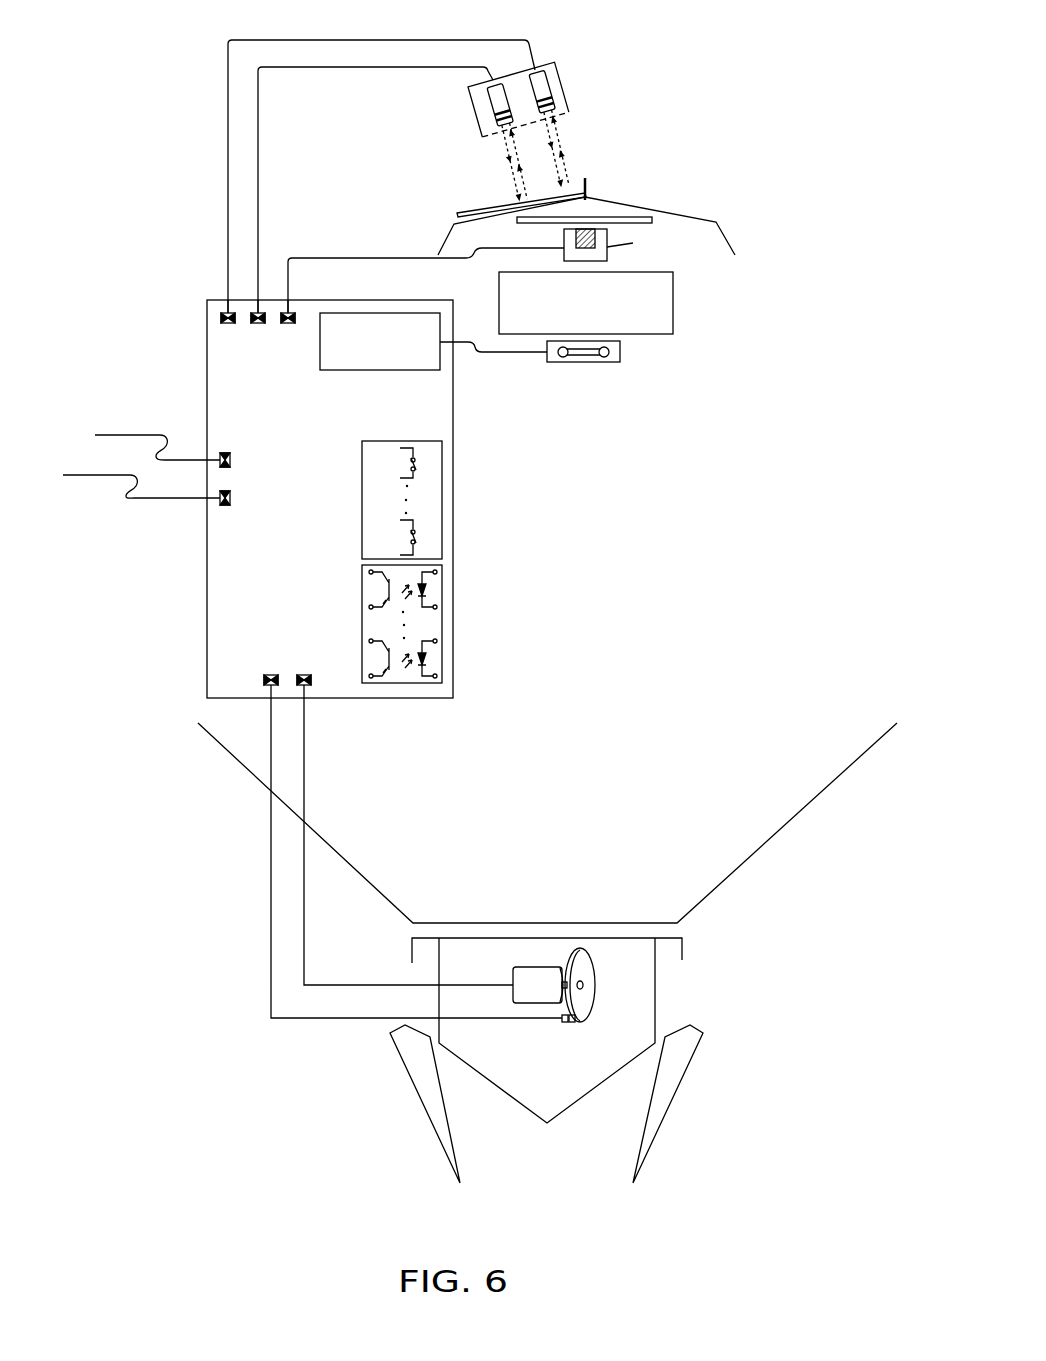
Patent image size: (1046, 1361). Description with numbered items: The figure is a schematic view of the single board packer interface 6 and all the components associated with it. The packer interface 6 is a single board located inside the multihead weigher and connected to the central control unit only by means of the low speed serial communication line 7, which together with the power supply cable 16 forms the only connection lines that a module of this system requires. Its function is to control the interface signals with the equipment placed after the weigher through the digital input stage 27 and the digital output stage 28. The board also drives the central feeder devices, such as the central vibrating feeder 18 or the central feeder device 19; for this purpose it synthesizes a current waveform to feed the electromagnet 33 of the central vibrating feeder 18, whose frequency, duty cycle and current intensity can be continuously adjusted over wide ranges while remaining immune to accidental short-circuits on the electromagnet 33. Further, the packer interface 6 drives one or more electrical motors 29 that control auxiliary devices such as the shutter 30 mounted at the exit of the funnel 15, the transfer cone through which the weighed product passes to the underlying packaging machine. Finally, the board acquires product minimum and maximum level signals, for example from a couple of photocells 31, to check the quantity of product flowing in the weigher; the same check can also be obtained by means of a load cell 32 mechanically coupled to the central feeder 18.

The packer interface 6 is at (207, 382).
The low speed serial communication line 7 is at (137, 435).
The funnel 15 is at (787, 823).
The power supply cable 16 is at (185, 500).
The central vibrating feeder 18 is at (683, 217).
The central feeder device 19 is at (462, 207).
The digital input stage 27 is at (442, 624).
The digital output stage 28 is at (442, 500).
The electrical motor 29 is at (537, 965).
The shutter 30 is at (670, 1107).
The photocells 31 is at (558, 62).
The load cell 32 is at (583, 362).
The electromagnet 33 is at (633, 243).